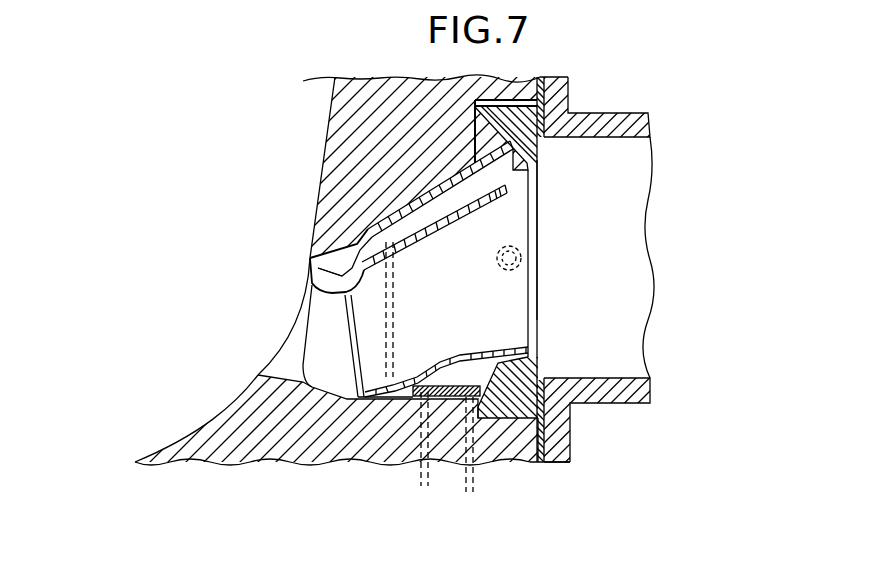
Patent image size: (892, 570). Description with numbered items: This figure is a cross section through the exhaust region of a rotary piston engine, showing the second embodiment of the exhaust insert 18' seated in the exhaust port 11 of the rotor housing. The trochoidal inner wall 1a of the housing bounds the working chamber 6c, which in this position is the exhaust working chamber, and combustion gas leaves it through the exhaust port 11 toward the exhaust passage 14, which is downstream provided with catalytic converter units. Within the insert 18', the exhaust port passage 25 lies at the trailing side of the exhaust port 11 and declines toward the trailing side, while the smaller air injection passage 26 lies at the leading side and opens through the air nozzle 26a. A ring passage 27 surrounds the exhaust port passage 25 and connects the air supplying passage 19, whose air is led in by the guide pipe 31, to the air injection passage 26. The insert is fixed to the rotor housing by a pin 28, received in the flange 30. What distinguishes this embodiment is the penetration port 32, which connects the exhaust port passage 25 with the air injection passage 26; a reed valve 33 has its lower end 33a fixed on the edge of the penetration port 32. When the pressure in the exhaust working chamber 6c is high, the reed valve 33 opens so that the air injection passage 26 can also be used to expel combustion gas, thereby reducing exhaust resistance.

The working chamber 6c is at (275, 174).
The exhaust port 11 is at (300, 321).
The inner wall 1a is at (252, 382).
The exhaust passage 14 is at (597, 142).
The insert 18' is at (583, 240).
The exhaust port passage 25 is at (520, 300).
The air injection passage 26 is at (344, 283).
The air nozzle 26a is at (330, 276).
The ring passage 27 is at (502, 366).
The pin 28 is at (510, 272).
The flange 30 is at (530, 405).
The guide pipe 31 is at (409, 377).
The air supplying passage 19 is at (467, 459).
The penetration port 32 is at (496, 190).
The reed valve 33 is at (469, 226).
The lower end of reed valve 33a is at (447, 238).